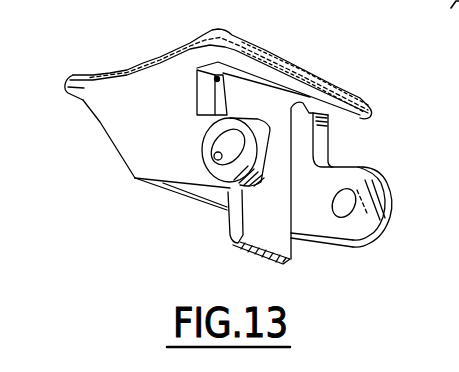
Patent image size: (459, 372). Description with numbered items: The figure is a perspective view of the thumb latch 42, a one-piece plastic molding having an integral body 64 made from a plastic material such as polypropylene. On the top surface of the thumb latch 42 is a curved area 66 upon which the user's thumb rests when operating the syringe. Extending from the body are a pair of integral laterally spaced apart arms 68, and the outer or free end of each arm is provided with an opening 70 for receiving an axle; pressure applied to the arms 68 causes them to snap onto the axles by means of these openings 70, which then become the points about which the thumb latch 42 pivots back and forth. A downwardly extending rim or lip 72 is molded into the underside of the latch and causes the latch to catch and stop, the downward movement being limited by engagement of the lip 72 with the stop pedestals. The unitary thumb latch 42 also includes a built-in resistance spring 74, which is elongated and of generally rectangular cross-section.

The thumb latch 42 is at (99, 147).
The curved area 66 is at (108, 73).
The integral body 64 is at (140, 170).
The integral laterally spaced apart arms 68 is at (198, 167).
The opening 70 is at (213, 158).
The downwardly extending rim or lip 72 is at (362, 119).
The resistance spring 74 is at (293, 250).